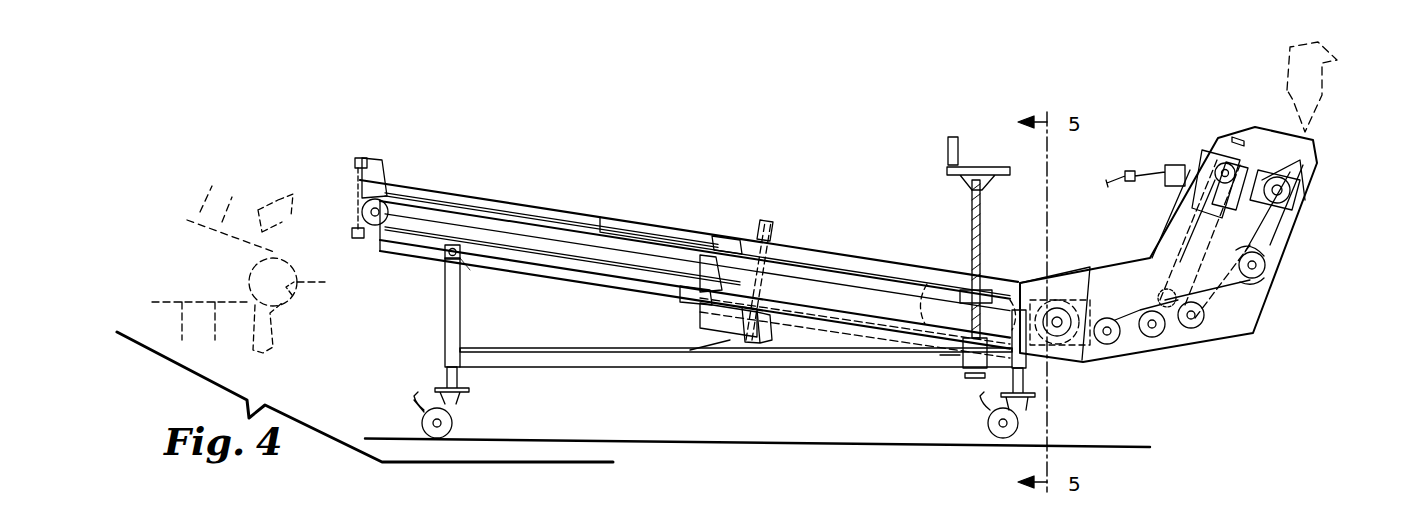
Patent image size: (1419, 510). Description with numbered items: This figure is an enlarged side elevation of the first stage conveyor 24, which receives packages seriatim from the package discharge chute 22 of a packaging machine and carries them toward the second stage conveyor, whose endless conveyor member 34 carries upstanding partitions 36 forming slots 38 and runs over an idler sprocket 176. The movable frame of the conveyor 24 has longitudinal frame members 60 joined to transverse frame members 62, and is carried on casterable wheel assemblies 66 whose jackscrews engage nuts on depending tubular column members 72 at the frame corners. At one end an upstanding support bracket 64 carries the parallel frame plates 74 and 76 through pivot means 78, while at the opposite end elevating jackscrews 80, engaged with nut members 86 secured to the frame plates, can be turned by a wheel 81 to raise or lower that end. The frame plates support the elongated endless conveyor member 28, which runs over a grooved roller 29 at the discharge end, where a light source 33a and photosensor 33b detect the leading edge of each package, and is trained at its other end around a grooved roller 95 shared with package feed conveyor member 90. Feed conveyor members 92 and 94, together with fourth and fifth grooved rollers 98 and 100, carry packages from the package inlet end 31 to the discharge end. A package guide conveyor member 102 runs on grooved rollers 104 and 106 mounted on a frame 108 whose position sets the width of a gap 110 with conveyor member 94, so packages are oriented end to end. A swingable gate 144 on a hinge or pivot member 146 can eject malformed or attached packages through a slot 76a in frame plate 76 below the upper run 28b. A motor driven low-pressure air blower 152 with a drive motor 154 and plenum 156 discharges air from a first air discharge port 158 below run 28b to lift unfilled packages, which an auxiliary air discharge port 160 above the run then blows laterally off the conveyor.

The package discharge chute 22 is at (1332, 95).
The first stage conveyor 24 is at (856, 217).
The endless conveyor member 28 is at (486, 201).
The upper run of the conveyor member 28b is at (546, 219).
The grooved roller 29 is at (355, 207).
The package inlet end 31 is at (1296, 160).
The light source 33a is at (352, 160).
The photosensor 33b is at (340, 239).
The endless conveyor member 34 is at (218, 194).
The partitions 36 is at (284, 197).
The slots 38 is at (322, 320).
The longitudinal frame members 60 is at (528, 348).
The transverse frame members 62 is at (937, 378).
The support bracket 64 is at (436, 312).
The casterable wheel assemblies 66 is at (472, 407).
The tubular column member 72 is at (473, 301).
The frame plate 74 is at (434, 193).
The frame plate 76 is at (684, 304).
The slot 76a is at (754, 236).
The pivot means 78 is at (436, 263).
The elevating jackscrews 80 is at (984, 204).
The wheel 81 is at (946, 170).
The nut members 86 is at (966, 271).
The package feed conveyor member 90 is at (1178, 348).
The package feed conveyor member 92 is at (1262, 330).
The package feed conveyor member 94 is at (1268, 250).
The grooved roller 95 is at (1122, 358).
The fourth grooved roller 98 is at (1264, 285).
The fifth grooved roller 100 is at (1312, 178).
The package guide conveyor member 102 is at (1168, 160).
The grooved roller 104 is at (1220, 142).
The grooved roller 106 is at (1162, 222).
The frame 108 is at (1236, 140).
The gap 110 is at (1286, 221).
The swingable gate 144 is at (608, 230).
The hinge or pivot member 146 is at (703, 222).
The motor driven low-pressure air blower 152 is at (732, 362).
The drive motor 154 is at (718, 346).
The plenum 156 is at (770, 338).
The first air discharge port 158 is at (784, 232).
The auxiliary air discharge port 160 is at (766, 220).
The idler sprocket 176 is at (246, 270).